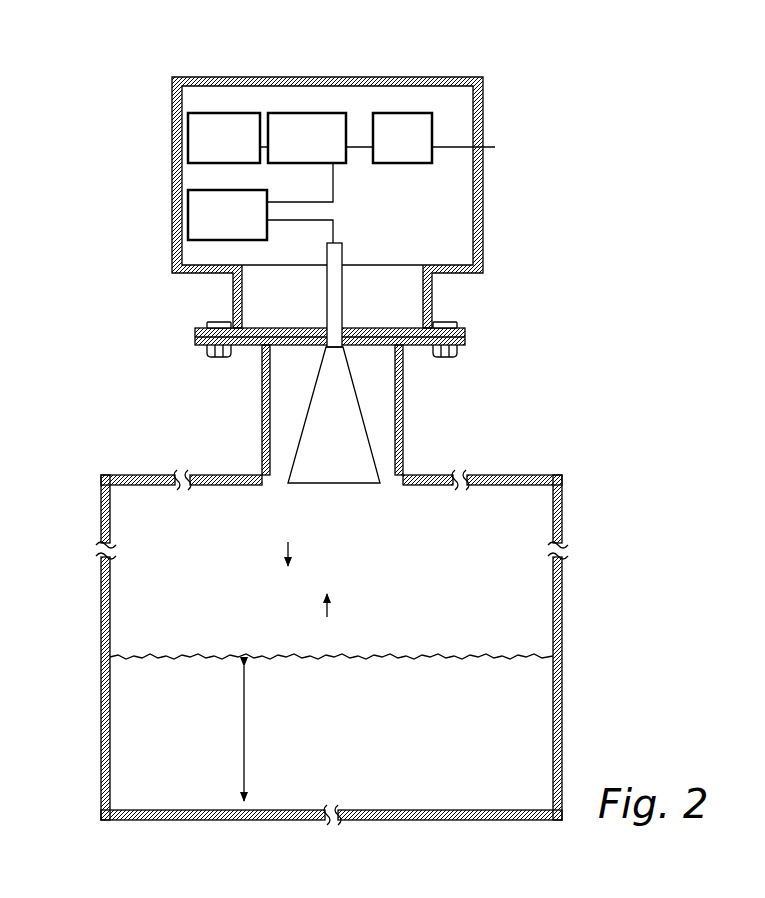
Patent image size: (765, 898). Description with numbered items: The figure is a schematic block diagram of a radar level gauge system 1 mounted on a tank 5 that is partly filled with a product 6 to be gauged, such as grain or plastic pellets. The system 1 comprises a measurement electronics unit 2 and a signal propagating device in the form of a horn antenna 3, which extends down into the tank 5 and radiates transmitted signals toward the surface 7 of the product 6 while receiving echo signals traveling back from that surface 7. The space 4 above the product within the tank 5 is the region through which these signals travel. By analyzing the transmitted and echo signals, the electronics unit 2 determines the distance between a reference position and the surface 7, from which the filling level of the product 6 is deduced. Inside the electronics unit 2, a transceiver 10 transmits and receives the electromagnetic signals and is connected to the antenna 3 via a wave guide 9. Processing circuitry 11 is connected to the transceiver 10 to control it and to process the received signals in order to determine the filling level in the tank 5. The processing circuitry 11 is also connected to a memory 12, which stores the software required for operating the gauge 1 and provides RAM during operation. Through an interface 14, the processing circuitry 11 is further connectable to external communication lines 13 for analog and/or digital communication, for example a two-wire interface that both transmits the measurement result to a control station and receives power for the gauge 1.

The radar level gauge system 1 is at (556, 254).
The measurement electronics unit 2 is at (255, 77).
The horn antenna 3 is at (376, 470).
The tank upper space 4 is at (171, 549).
The tank 5 is at (492, 475).
The product 6 is at (478, 755).
The surface 7 is at (518, 657).
The wave guide 9 is at (336, 238).
The transceiver 10 is at (188, 218).
The processing circuitry 11 is at (316, 113).
The memory 12 is at (188, 146).
The external communication lines 13 is at (488, 150).
The interface 14 is at (404, 113).